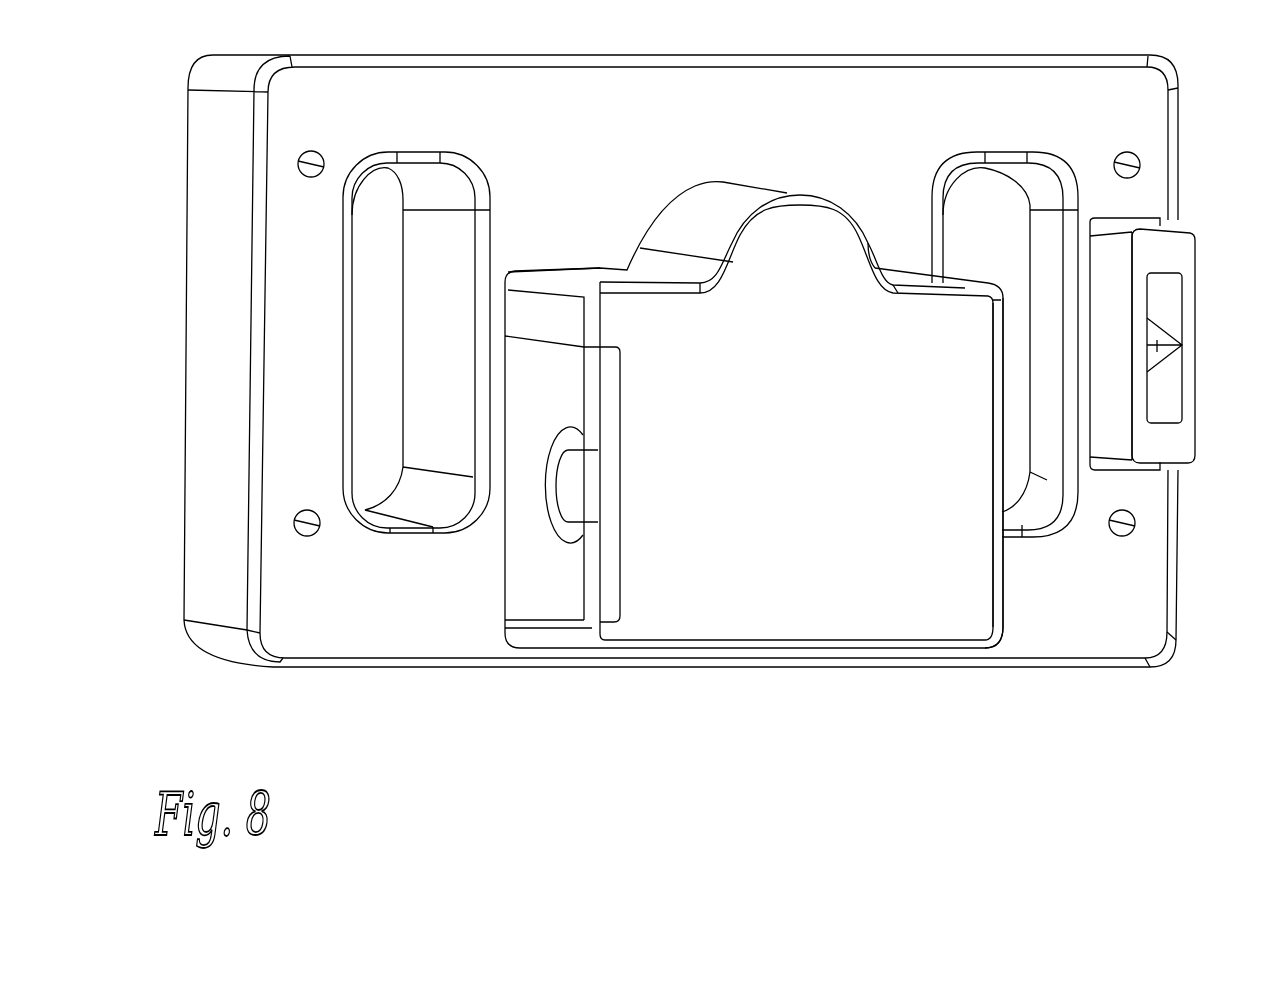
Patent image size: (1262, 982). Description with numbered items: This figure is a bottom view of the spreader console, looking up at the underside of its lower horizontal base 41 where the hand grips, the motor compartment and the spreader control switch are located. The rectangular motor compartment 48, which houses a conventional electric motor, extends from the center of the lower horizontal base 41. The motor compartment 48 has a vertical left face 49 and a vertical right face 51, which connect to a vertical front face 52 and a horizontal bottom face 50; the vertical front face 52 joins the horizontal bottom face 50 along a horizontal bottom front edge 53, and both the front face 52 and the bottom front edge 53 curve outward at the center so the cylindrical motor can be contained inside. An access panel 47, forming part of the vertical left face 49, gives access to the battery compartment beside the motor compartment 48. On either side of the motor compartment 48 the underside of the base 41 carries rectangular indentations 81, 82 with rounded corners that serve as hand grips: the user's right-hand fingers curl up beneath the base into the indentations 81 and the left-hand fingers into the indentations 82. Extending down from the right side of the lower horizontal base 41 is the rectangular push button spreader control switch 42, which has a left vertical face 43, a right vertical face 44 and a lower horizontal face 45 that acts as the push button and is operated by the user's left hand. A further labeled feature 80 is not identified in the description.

The lower horizontal base 41 is at (681, 361).
The front face of wall plate 80 is at (869, 131).
The indentations 82 is at (416, 342).
The rectangular indentations 81 is at (1005, 344).
The motor compartment 48 is at (787, 396).
The vertical front face 52 is at (700, 213).
The horizontal bottom front edge 53 is at (923, 267).
The vertical left face 49 is at (528, 313).
The access panel 47 is at (562, 482).
The horizontal bottom face 50 is at (796, 422).
The vertical right face 51 is at (1000, 605).
The spreader control switch 42 is at (1168, 344).
The lower horizontal face 45 is at (1170, 253).
The right vertical face 44 is at (1193, 327).
The left vertical face 43 is at (1112, 402).